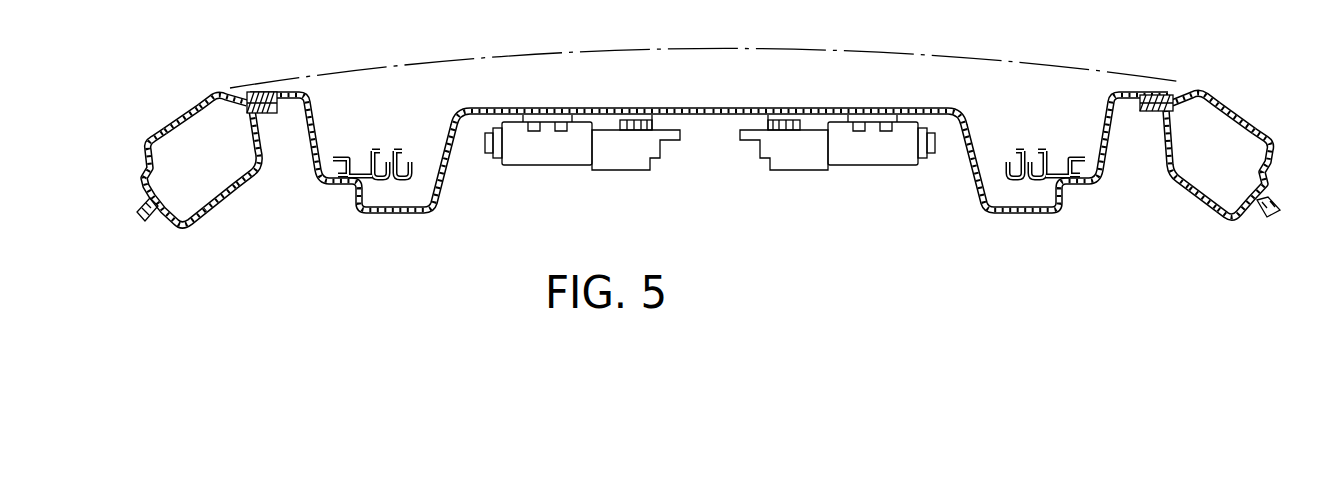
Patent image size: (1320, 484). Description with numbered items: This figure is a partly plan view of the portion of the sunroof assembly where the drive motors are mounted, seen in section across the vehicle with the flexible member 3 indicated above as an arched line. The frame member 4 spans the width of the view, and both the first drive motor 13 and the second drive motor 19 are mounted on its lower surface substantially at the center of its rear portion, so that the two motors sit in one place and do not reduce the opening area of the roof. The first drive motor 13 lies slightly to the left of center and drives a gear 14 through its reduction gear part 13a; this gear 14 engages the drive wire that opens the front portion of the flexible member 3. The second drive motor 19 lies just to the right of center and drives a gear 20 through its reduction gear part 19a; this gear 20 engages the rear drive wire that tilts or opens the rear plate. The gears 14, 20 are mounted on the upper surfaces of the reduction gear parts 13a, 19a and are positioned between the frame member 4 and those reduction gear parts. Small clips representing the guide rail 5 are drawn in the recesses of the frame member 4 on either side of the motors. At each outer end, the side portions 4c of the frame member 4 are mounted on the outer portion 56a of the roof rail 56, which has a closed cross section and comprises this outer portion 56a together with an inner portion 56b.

The flexible member 3 is at (723, 51).
The frame member 4 is at (990, 211).
The side portion of the frame member 4c is at (282, 92).
The guide rail 5 is at (387, 152).
The first drive motor 13 is at (533, 165).
The reduction gear part 13a is at (620, 170).
The gear 14 is at (653, 116).
The second drive motor 19 is at (875, 163).
The reduction gear part 19a is at (783, 170).
The gear 20 is at (806, 115).
The roof rail 56 is at (206, 225).
The outer portion of the roof rail 56a is at (172, 117).
The inner portion of the roof rail 56b is at (233, 200).